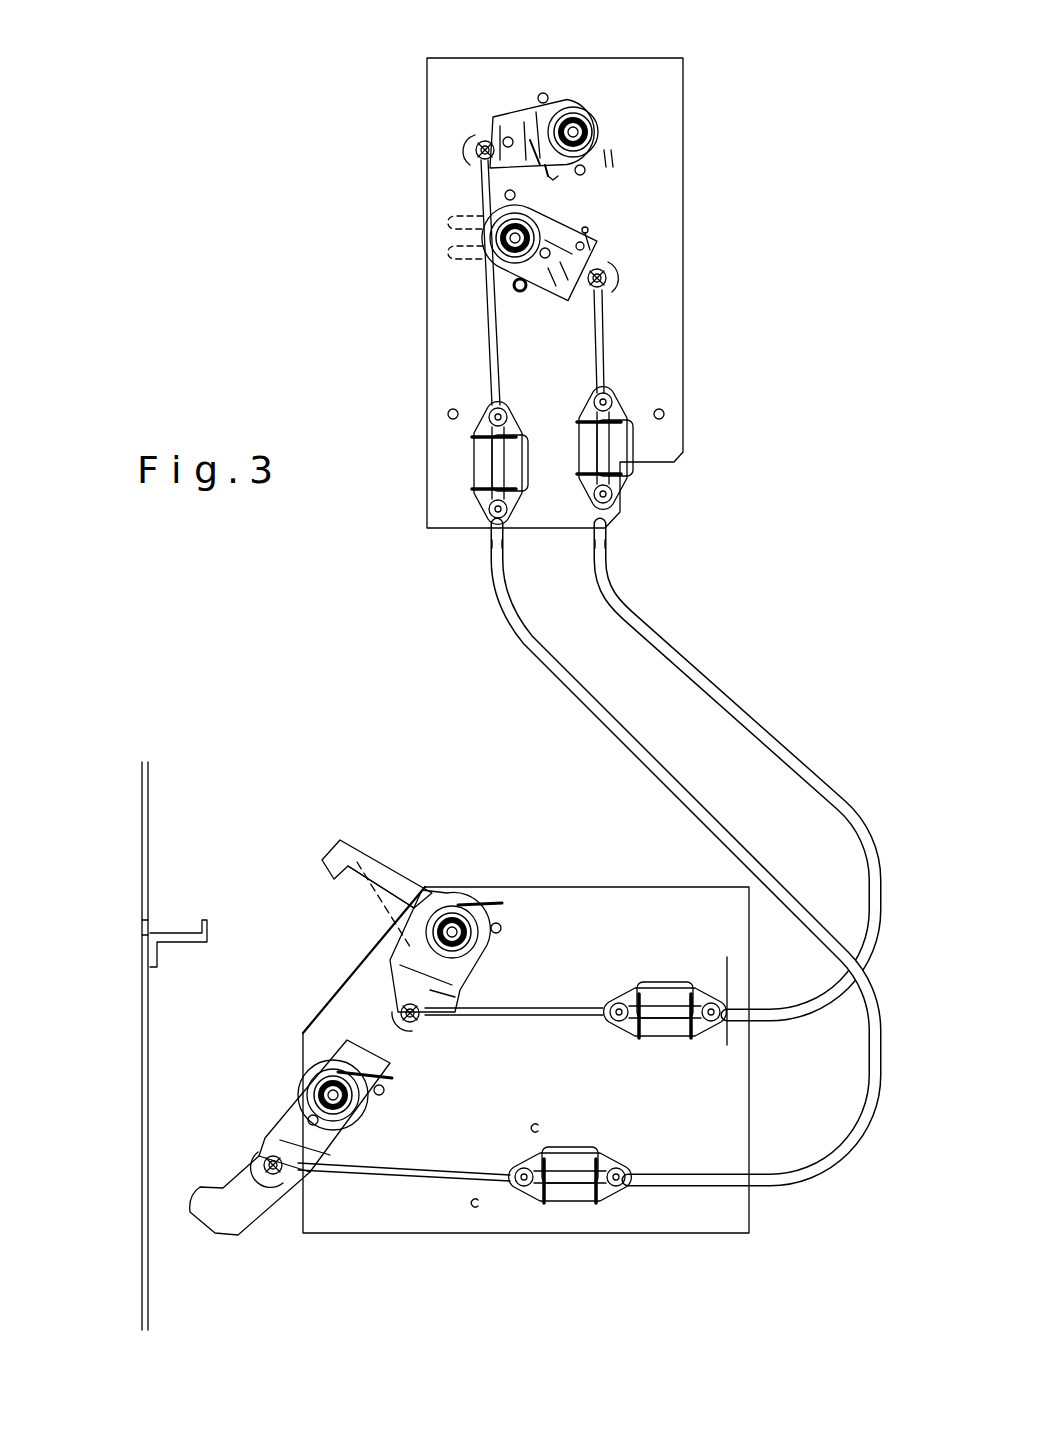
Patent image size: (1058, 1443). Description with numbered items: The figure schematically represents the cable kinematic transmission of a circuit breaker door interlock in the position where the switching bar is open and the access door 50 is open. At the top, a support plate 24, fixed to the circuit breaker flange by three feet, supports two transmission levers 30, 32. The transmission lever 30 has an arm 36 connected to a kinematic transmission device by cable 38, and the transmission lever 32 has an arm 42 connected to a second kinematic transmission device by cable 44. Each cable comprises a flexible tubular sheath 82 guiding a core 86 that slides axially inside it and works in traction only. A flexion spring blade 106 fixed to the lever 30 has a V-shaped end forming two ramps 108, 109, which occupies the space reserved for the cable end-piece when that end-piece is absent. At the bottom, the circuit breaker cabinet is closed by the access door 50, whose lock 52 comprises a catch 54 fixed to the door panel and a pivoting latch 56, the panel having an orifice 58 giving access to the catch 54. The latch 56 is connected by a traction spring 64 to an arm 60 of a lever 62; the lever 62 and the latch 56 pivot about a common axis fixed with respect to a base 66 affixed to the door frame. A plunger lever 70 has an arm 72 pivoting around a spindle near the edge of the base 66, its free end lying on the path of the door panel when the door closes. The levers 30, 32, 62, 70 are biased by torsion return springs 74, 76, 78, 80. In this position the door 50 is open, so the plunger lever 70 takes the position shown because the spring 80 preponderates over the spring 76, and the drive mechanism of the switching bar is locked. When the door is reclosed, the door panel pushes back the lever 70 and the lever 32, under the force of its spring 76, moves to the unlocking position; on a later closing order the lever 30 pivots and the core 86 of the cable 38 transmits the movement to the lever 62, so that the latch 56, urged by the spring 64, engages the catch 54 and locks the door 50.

The support plate 24 is at (673, 410).
The transmission lever 30 is at (640, 210).
The transmission lever 32 is at (655, 78).
The arm 36 is at (527, 297).
The kinematic transmission device by cable 38 is at (741, 769).
The arm 42 is at (528, 88).
The kinematic transmission device by cable 44 is at (567, 695).
The access door 50 is at (150, 803).
The lock 52 is at (336, 828).
The catch 54 is at (173, 943).
The pivoting latch 56 is at (387, 877).
The orifice 58 is at (147, 928).
The arm 60 is at (470, 1002).
The lever 62 is at (498, 962).
The traction spring 64 is at (387, 908).
The base 66 is at (610, 905).
The plunger lever 70 is at (225, 1172).
The arm 72 is at (287, 1110).
The torsion return spring 74 is at (482, 203).
The torsion return spring 76 is at (600, 150).
The torsion return spring 78 is at (486, 897).
The torsion return spring 80 is at (377, 1088).
The tubular sheath 82 is at (647, 633).
The core 86 is at (603, 337).
The flexion spring blade 106 is at (582, 225).
The ramp 108 is at (584, 243).
The ramp 109 is at (590, 284).